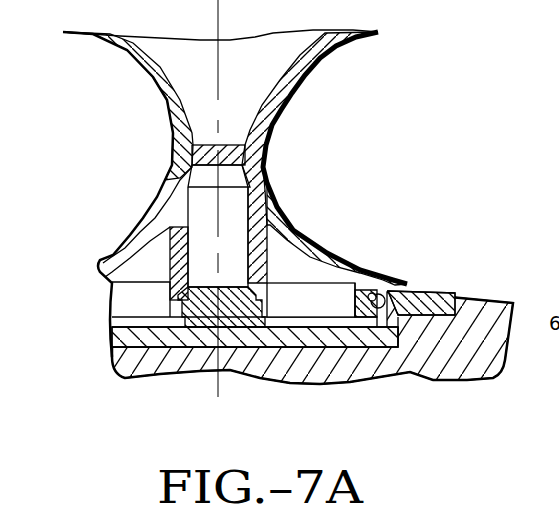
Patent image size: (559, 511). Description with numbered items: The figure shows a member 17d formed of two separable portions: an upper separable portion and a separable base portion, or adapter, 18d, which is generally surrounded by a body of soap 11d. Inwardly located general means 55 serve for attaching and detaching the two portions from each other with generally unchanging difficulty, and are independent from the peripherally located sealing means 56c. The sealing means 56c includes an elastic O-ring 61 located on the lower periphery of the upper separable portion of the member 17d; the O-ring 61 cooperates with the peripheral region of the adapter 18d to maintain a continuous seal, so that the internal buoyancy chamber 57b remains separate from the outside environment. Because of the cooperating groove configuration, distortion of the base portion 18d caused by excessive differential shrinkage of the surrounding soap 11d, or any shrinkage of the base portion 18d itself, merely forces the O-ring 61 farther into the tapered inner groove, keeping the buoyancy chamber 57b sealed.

The member 17d is at (302, 215).
The internal buoyancy chamber 57b is at (315, 297).
The peripherally located sealing means 56c is at (381, 266).
The elastic O-ring 61 is at (400, 320).
The general means for attachment and detachment 55 is at (223, 360).
The separable base portion (adapter) 18d is at (299, 358).
The body of soap 11d is at (497, 377).